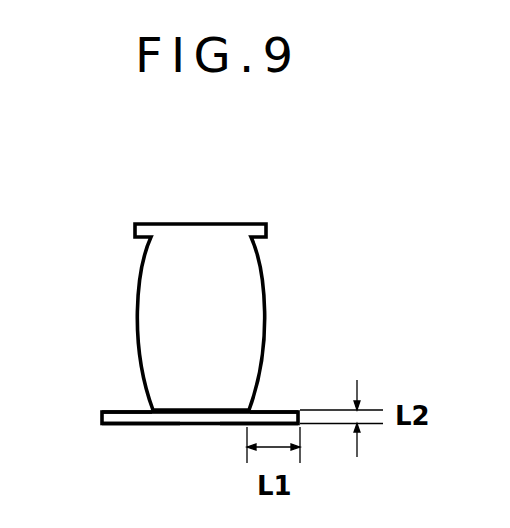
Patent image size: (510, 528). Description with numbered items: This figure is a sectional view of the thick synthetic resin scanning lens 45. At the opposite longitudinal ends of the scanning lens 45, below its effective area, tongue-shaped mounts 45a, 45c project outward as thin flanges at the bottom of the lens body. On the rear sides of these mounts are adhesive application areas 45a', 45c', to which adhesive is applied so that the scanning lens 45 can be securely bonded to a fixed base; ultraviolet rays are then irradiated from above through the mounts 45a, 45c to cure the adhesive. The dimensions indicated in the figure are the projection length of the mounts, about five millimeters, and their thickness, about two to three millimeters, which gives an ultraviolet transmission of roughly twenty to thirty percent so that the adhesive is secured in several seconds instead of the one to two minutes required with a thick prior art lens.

The scanning lens 45 is at (267, 308).
The mount 45a is at (295, 384).
The mount 45c is at (111, 380).
The adhesive application area 45c' is at (141, 453).
The adhesive application area 45a' is at (237, 458).